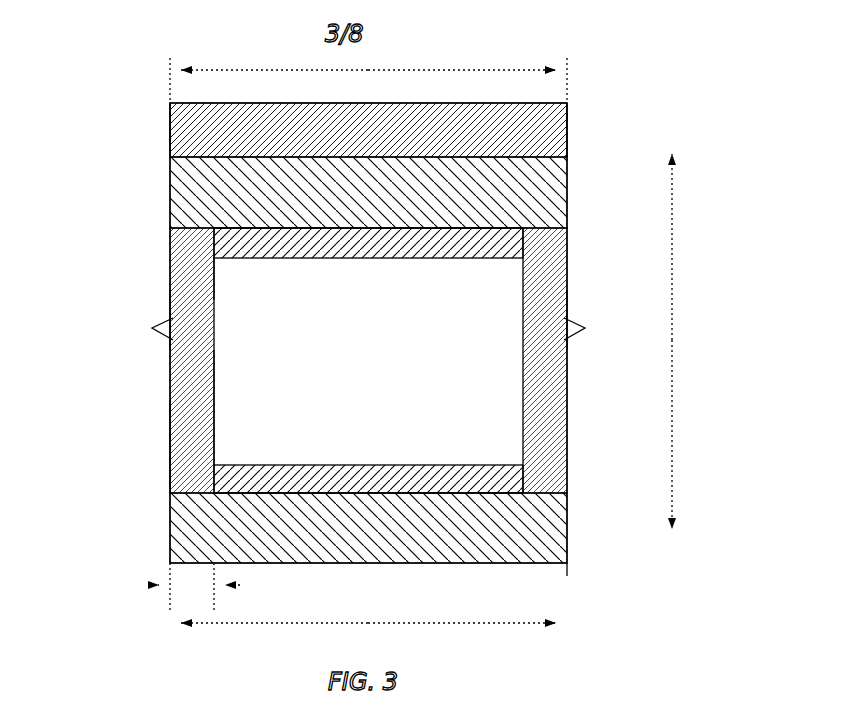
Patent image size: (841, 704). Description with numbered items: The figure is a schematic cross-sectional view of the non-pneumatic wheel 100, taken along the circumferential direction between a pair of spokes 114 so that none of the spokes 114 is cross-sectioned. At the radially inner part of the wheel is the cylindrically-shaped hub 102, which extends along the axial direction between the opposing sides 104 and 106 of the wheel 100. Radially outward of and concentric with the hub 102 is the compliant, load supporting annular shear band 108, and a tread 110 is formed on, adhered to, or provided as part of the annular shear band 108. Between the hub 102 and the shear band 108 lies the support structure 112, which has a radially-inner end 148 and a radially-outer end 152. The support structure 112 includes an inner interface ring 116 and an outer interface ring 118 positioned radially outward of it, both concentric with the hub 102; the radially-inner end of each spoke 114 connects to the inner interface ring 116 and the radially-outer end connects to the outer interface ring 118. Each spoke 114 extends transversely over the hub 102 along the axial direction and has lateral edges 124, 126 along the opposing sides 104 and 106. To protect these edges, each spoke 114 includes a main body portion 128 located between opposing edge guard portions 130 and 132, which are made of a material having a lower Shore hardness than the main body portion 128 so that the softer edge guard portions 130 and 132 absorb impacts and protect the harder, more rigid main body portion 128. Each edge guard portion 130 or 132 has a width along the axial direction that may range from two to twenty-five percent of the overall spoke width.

The non-pneumatic wheel 100 is at (626, 60).
The hub 102 is at (178, 524).
The side 104 is at (170, 152).
The side 106 is at (571, 157).
The annular shear band 108 is at (178, 202).
The tread 110 is at (185, 130).
The support structure 112 is at (169, 300).
The spoke 114 is at (175, 432).
The inner interface ring 116 is at (175, 472).
The outer interface ring 118 is at (175, 238).
The lateral edge 124 is at (169, 395).
The lateral edge 126 is at (569, 405).
The main body portion 128 is at (183, 283).
The edge guard portion 130 is at (215, 392).
The edge guard portion 132 is at (568, 365).
The radially-inner end 148 is at (385, 498).
The radially-outer end 152 is at (371, 222).